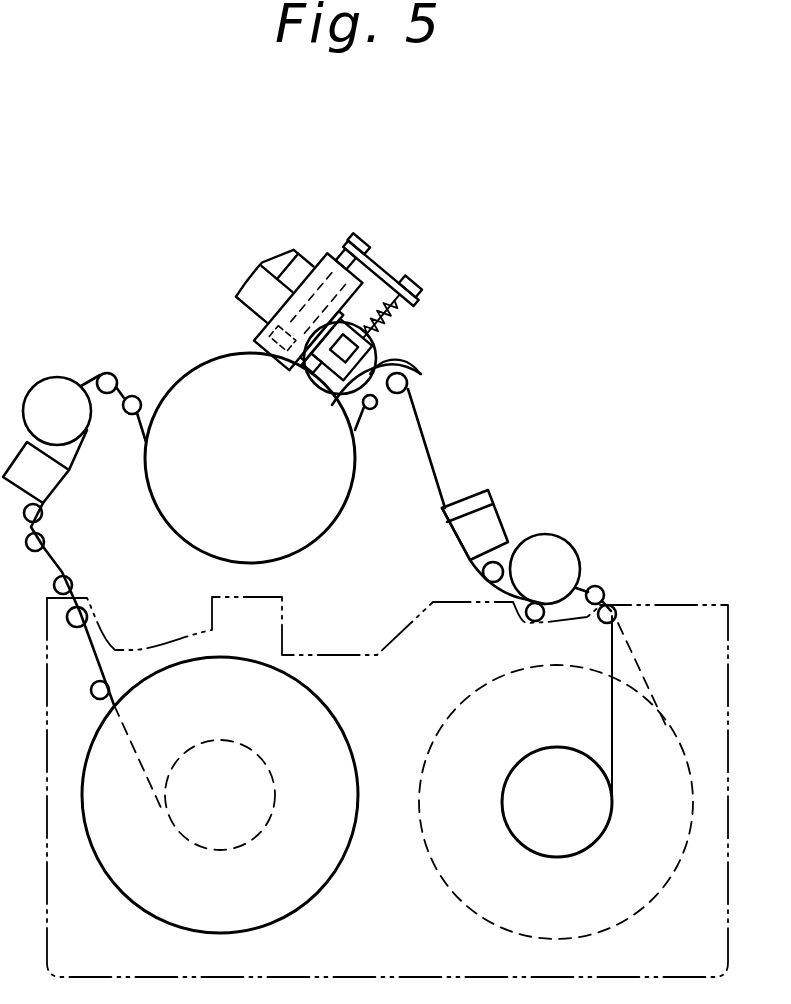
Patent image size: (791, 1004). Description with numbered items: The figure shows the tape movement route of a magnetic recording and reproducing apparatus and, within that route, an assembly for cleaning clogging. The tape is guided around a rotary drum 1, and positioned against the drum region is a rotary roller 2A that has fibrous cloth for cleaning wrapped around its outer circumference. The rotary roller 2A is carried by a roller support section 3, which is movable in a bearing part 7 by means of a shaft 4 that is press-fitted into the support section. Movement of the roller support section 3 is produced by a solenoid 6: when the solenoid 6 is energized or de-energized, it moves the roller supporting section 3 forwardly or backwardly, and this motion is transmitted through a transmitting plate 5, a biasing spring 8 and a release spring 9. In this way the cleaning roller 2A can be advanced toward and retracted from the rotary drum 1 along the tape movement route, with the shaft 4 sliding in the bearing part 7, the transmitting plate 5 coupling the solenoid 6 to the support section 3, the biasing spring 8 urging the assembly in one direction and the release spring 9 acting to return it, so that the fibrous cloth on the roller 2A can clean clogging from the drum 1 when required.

The rotary drum 1 is at (205, 368).
The rotary roller 2A is at (385, 364).
The roller support section 3 is at (337, 398).
The shaft 4 is at (382, 339).
The transmitting plate 5 is at (383, 272).
The solenoid 6 is at (271, 268).
The bearing part 7 is at (291, 356).
The biasing spring 8 is at (414, 314).
The release spring 9 is at (346, 256).